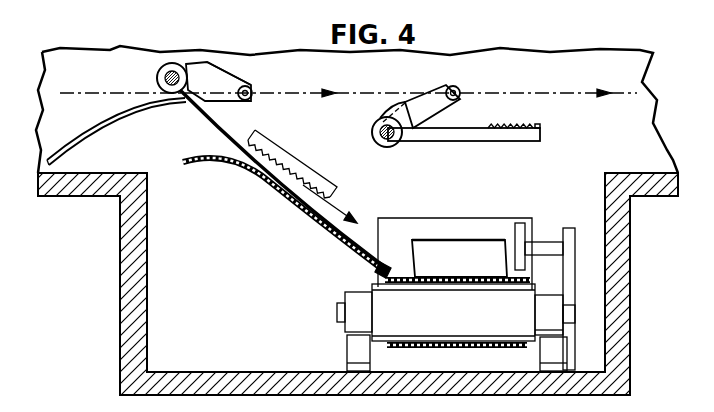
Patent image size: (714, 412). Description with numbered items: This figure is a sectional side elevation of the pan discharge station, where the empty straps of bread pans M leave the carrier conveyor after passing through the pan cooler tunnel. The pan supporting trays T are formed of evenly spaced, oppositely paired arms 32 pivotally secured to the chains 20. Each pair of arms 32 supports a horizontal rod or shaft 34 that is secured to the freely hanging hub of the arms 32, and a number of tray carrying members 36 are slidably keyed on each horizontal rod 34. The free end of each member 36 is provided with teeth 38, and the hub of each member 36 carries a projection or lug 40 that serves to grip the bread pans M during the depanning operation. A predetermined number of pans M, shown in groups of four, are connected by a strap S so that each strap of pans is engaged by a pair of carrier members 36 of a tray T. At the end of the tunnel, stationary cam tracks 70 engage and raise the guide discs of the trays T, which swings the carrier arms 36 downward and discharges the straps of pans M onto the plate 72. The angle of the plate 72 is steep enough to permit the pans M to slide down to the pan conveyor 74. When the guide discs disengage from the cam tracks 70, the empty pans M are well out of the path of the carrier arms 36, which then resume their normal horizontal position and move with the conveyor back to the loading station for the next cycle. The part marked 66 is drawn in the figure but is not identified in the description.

The chains 20 is at (307, 91).
The arms 32 is at (226, 88).
The horizontal rod 34 is at (158, 79).
The tray carrying members 36 is at (223, 125).
The teeth 38 is at (273, 153).
The lug 40 is at (194, 63).
The arm edge 66 is at (220, 60).
The stationary cam tracks 70 is at (100, 130).
The plate 72 is at (323, 223).
The pan conveyor 74 is at (380, 270).
The strap S is at (255, 130).
The pans M is at (305, 170).
The pan supporting trays T is at (175, 111).